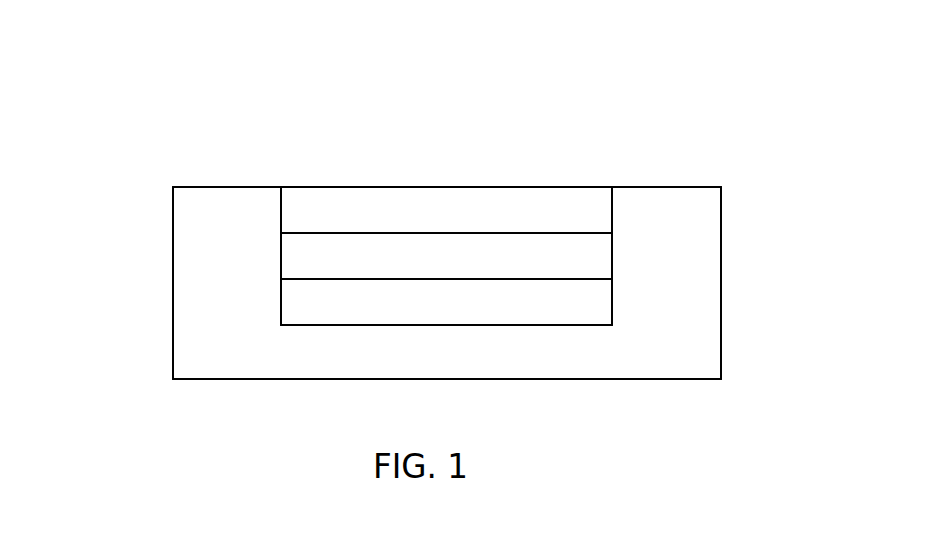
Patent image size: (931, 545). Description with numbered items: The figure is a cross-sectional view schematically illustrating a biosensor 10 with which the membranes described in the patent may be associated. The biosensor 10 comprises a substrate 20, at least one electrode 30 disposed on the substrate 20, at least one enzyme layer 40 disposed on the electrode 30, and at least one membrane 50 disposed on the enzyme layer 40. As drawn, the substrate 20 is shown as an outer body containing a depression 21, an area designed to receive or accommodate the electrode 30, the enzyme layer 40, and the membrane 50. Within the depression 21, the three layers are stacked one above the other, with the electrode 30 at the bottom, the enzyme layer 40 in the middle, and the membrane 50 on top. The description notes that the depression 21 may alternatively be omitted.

The biosensor 10 is at (164, 132).
The substrate 20 is at (227, 325).
The depression 21 is at (281, 268).
The electrode 30 is at (557, 297).
The enzyme layer 40 is at (557, 255).
The membrane 50 is at (458, 217).